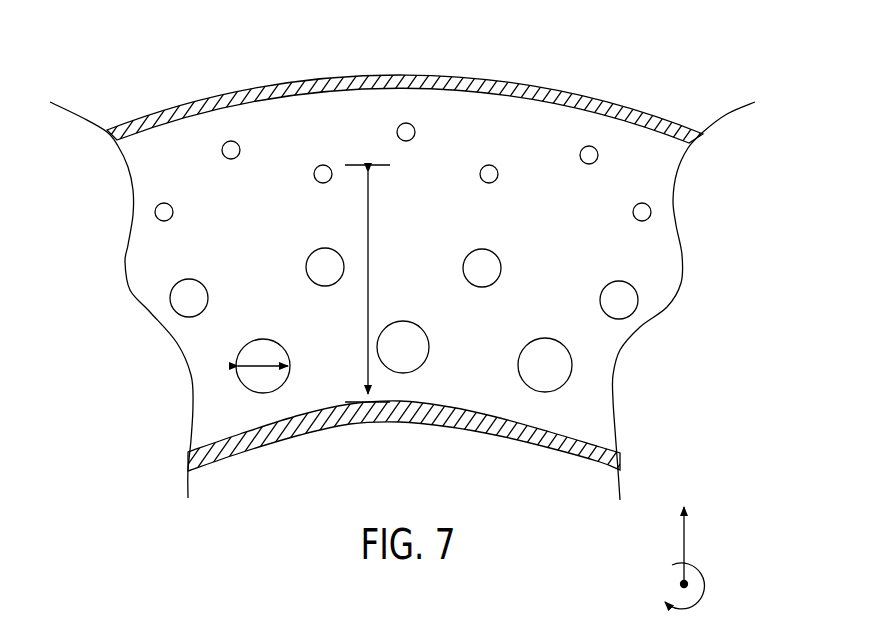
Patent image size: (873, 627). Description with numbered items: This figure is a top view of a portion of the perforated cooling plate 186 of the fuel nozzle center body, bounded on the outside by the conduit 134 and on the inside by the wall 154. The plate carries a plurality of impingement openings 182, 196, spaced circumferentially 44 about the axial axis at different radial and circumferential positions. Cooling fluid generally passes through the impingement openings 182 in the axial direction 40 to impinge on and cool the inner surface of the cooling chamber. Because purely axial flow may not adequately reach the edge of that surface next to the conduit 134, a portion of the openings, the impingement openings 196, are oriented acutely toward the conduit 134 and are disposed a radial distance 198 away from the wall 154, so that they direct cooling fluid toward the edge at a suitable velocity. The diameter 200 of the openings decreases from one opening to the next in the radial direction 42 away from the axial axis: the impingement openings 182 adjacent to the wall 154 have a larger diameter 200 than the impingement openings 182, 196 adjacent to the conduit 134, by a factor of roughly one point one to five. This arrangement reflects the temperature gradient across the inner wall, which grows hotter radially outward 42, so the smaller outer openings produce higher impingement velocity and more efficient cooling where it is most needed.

The perforated cooling plate 186 is at (141, 88).
The conduit 134 is at (483, 85).
The wall 154 is at (503, 430).
The impingement openings 182 is at (231, 150).
The angled impingement openings 196 is at (323, 173).
The radial distance 198 is at (370, 252).
The diameter 200 is at (266, 364).
The axial direction 40 is at (677, 581).
The radial direction 42 is at (685, 541).
The circumferential direction 44 is at (708, 585).